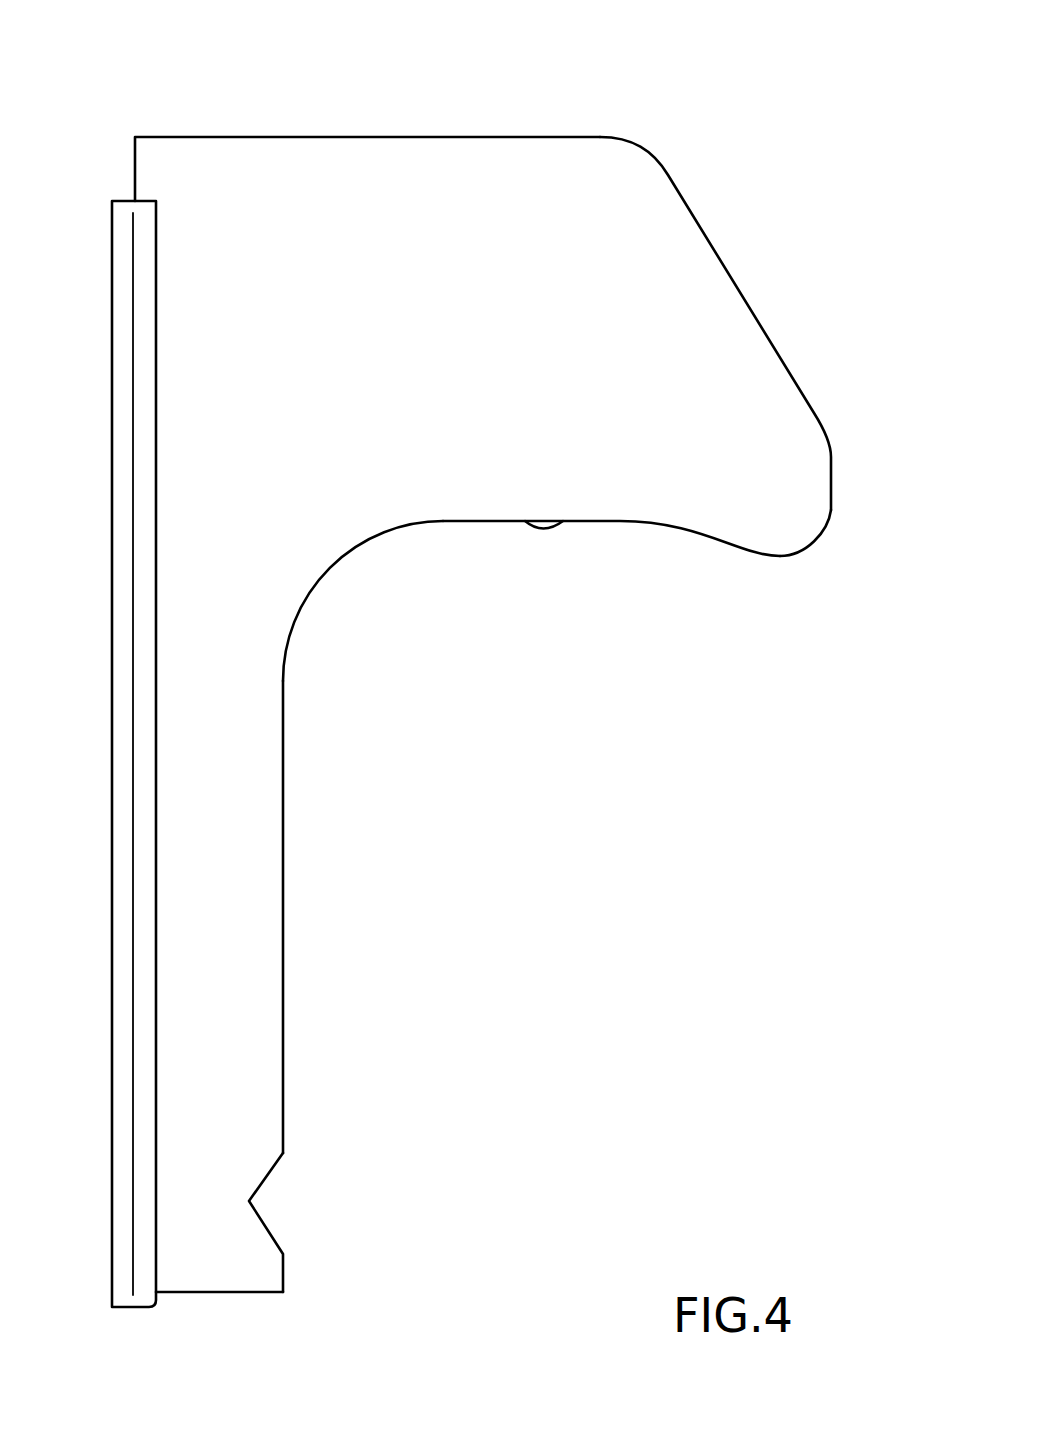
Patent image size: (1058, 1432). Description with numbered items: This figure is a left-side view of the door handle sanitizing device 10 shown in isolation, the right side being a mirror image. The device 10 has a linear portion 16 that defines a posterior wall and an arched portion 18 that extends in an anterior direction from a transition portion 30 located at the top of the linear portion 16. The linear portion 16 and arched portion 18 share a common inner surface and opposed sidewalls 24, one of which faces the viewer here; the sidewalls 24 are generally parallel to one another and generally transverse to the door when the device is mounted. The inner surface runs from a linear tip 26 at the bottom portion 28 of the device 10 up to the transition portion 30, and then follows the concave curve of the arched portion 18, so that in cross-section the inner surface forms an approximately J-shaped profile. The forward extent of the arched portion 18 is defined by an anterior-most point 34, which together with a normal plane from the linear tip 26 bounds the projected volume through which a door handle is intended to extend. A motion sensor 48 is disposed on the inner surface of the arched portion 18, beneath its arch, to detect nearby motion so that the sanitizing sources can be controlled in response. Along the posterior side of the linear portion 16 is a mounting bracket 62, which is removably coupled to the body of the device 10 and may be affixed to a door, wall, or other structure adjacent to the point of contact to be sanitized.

The door handle sanitizing device 10 is at (280, 112).
The linear portion 16 is at (360, 876).
The arched portion 18 is at (842, 462).
The sidewalls 24 is at (392, 349).
The linear tip 26 is at (283, 1292).
The bottom portion 28 is at (381, 1206).
The transition portion 30 is at (322, 694).
The anterior-most point 34 is at (831, 512).
The motion sensor 48 is at (543, 526).
The mounting bracket 62 is at (123, 765).